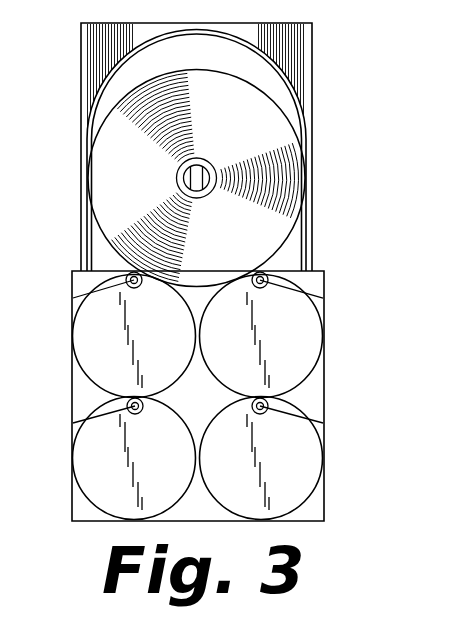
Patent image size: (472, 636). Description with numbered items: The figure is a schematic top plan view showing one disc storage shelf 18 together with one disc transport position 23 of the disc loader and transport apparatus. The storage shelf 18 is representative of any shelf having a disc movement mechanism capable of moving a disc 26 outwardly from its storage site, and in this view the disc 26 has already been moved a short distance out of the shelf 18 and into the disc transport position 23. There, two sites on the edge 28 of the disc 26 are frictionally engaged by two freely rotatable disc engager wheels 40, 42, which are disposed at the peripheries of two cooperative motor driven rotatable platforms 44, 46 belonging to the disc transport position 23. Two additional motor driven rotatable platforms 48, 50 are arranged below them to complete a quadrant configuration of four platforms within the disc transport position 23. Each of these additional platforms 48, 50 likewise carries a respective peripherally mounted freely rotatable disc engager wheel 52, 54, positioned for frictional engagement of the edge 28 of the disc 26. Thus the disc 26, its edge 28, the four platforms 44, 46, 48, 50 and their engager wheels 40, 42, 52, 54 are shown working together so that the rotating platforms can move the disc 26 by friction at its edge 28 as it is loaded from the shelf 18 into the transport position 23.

The storage shelf 18 is at (270, 77).
The edge 28 is at (282, 103).
The disc 26 is at (297, 137).
The disc transport position 23 is at (340, 393).
The disc engager wheel 40 is at (75, 298).
The disc engager wheel 42 is at (322, 297).
The motor driven rotatable platform 44 is at (82, 333).
The motor driven rotatable platform 46 is at (312, 332).
The motor driven rotatable platform 48 is at (85, 458).
The motor driven rotatable platform 50 is at (313, 457).
The disc engager wheel 52 is at (78, 421).
The disc engager wheel 54 is at (320, 420).